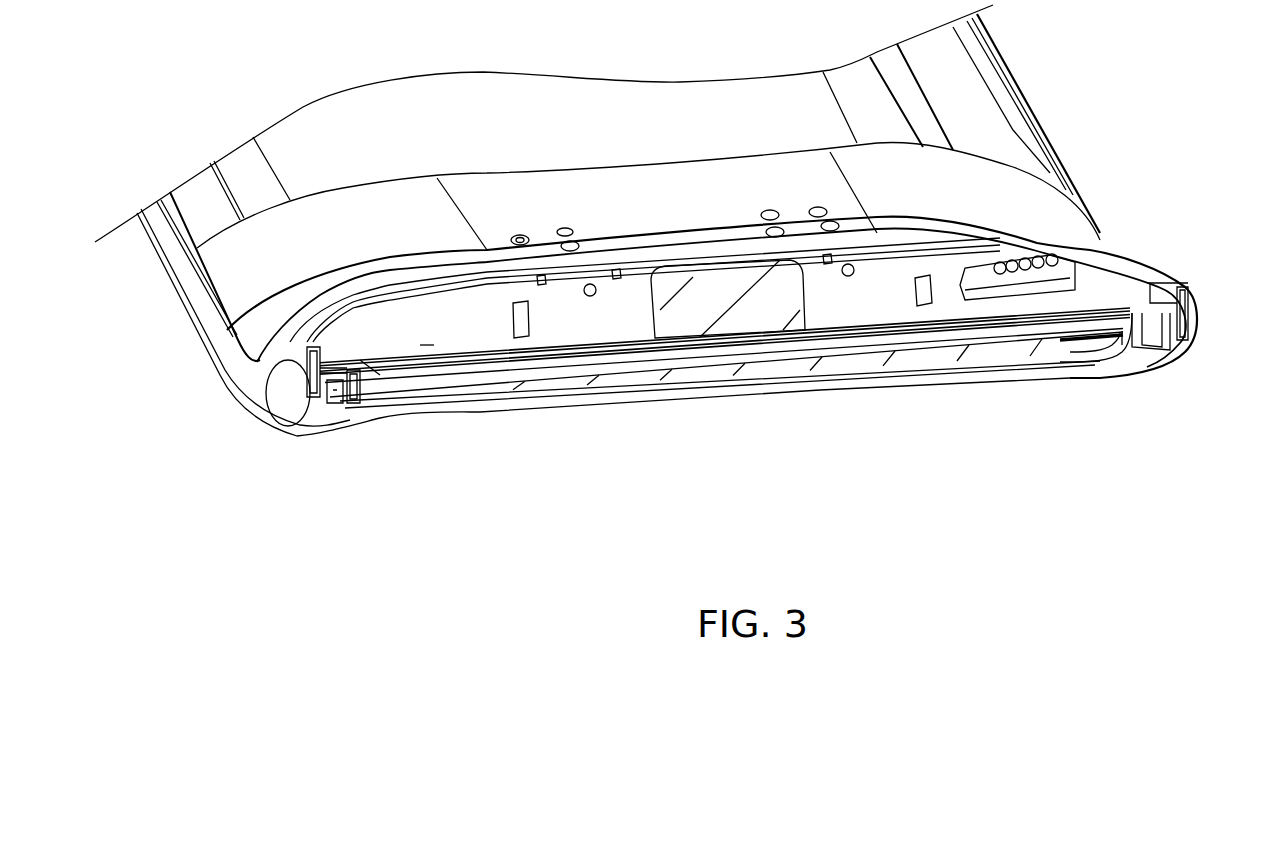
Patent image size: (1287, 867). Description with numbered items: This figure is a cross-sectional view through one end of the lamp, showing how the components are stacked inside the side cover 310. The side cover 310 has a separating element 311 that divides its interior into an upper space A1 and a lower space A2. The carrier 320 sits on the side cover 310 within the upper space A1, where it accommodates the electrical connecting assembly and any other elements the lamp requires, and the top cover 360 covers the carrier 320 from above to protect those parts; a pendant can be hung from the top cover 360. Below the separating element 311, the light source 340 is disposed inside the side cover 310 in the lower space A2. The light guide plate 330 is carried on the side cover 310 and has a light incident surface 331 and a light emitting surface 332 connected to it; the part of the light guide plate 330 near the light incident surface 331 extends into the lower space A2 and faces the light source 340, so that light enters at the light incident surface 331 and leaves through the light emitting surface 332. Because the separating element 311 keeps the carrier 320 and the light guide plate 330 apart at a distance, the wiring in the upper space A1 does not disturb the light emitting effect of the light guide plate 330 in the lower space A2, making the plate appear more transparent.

The side cover 310 is at (300, 410).
The separating element 311 is at (330, 372).
The carrier 320 is at (1108, 282).
The light guide plate 330 is at (917, 360).
The light incident surface 331 is at (1123, 340).
The light emitting surface 332 is at (767, 373).
The light source 340 is at (1125, 350).
The top cover 360 is at (1103, 238).
The upper space A1 is at (428, 325).
The lower space A2 is at (368, 370).